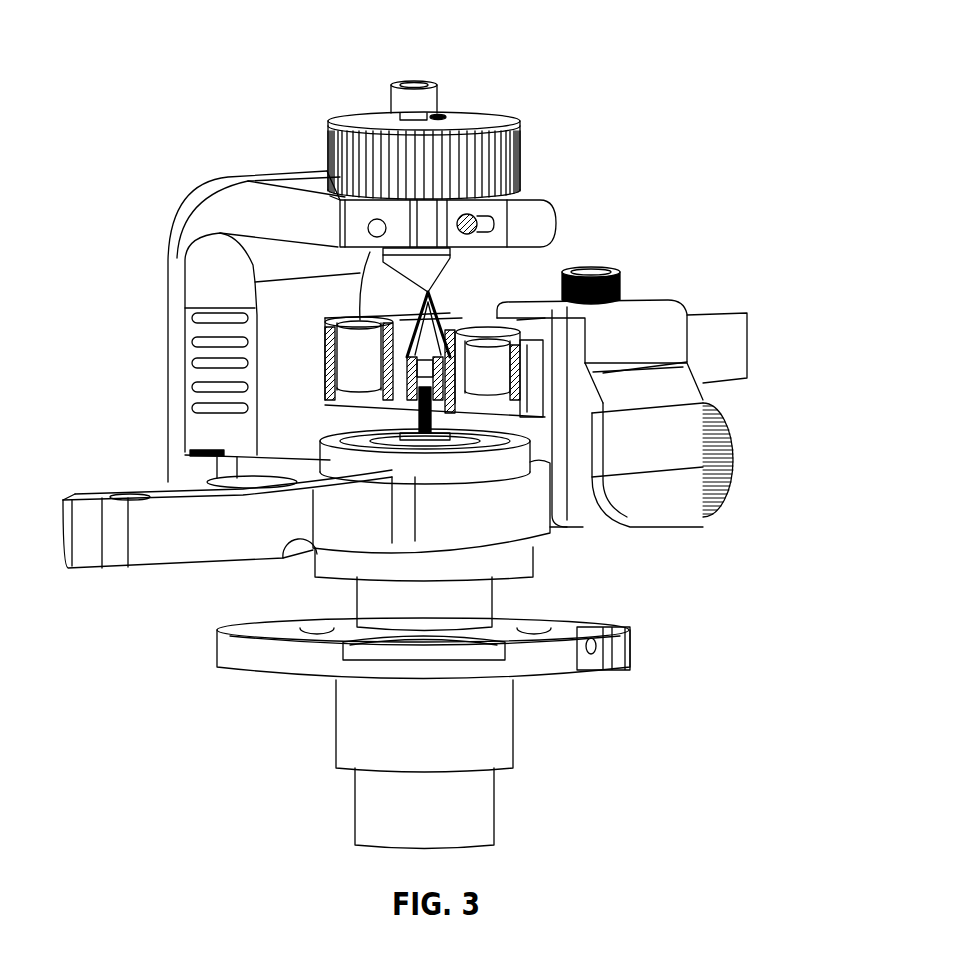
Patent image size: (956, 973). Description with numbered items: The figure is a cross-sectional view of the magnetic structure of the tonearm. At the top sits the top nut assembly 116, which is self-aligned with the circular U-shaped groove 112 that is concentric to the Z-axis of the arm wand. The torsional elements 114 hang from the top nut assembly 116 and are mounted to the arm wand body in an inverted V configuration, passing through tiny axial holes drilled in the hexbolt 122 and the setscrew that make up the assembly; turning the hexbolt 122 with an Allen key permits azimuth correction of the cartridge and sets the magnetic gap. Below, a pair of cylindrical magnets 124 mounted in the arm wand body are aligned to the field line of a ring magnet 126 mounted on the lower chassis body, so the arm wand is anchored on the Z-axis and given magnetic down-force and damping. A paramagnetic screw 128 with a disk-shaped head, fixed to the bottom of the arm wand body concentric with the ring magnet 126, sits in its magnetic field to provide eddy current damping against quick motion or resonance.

The circular U-shaped groove 112 is at (422, 285).
The torsional elements 114 is at (440, 310).
The top nut assembly 116 is at (502, 112).
The hexbolt 122 is at (415, 98).
The pair of cylindrical magnets 124 is at (347, 340).
The ring magnet 126 is at (320, 462).
The screw 128 is at (375, 415).